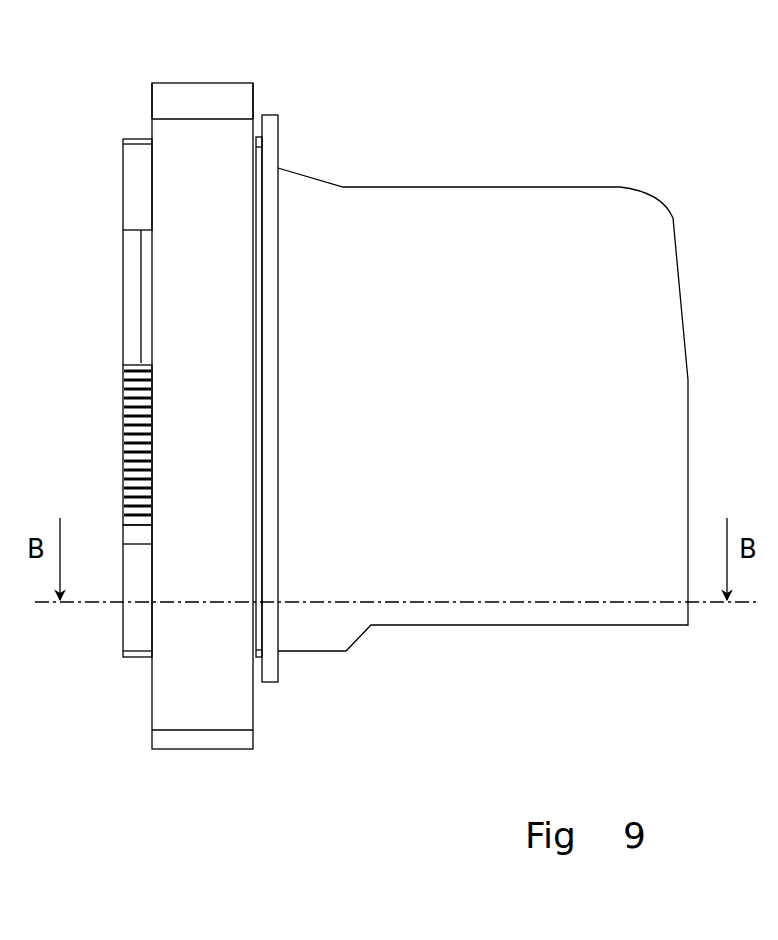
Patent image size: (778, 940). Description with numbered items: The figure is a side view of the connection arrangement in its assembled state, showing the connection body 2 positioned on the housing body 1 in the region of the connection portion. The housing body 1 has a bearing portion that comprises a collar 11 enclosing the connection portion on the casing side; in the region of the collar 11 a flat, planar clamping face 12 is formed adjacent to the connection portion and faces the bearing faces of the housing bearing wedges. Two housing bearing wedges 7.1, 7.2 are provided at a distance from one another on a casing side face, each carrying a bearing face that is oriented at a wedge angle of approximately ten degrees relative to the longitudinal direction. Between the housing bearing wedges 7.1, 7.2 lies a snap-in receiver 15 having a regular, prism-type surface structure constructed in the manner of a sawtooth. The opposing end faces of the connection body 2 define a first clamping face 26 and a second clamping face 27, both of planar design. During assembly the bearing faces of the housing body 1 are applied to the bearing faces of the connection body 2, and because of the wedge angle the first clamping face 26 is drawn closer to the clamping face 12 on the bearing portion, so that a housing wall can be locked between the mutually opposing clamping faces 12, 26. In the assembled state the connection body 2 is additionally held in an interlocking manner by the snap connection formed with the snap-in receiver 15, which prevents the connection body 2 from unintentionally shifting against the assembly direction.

The housing body 1 is at (511, 311).
The connection body 2 is at (206, 276).
The housing bearing wedge 7.1 is at (133, 195).
The housing bearing wedge 7.2 is at (134, 632).
The collar 11 is at (272, 172).
The clamping face 12 is at (258, 340).
The snap-in receiver 15 is at (120, 428).
The first clamping face 26 is at (258, 102).
The second clamping face 27 is at (150, 100).